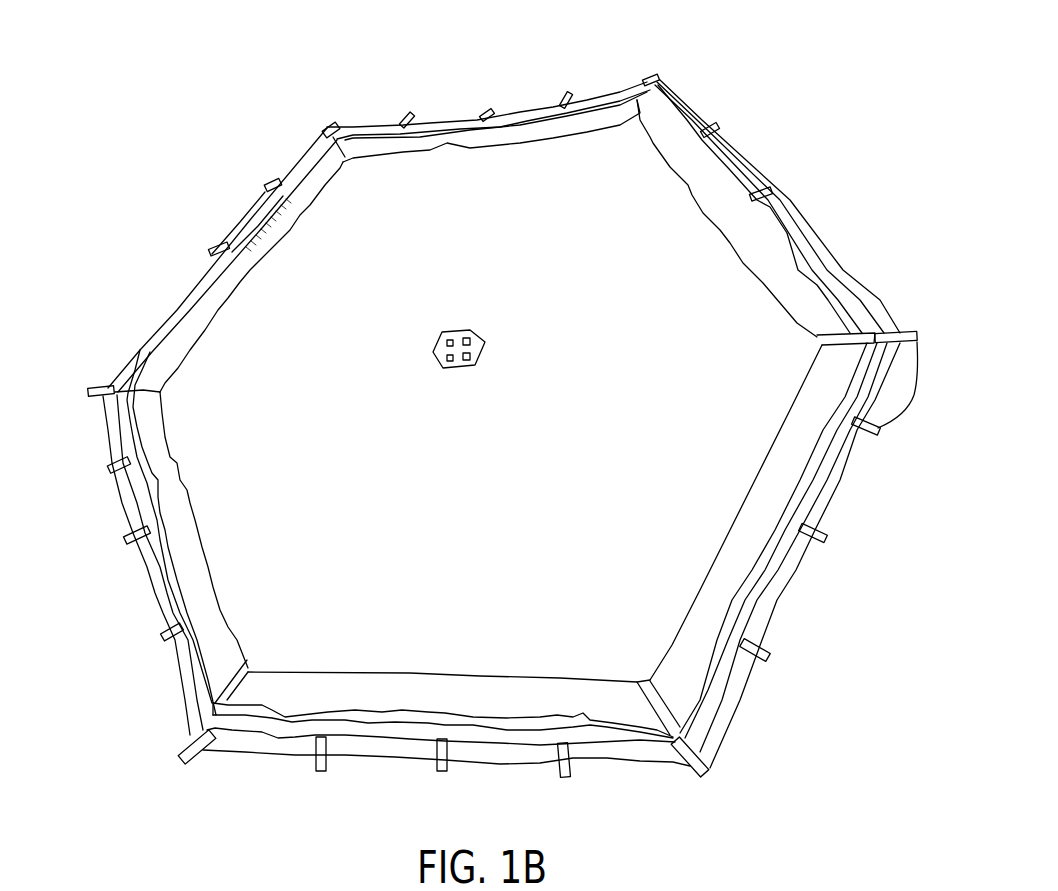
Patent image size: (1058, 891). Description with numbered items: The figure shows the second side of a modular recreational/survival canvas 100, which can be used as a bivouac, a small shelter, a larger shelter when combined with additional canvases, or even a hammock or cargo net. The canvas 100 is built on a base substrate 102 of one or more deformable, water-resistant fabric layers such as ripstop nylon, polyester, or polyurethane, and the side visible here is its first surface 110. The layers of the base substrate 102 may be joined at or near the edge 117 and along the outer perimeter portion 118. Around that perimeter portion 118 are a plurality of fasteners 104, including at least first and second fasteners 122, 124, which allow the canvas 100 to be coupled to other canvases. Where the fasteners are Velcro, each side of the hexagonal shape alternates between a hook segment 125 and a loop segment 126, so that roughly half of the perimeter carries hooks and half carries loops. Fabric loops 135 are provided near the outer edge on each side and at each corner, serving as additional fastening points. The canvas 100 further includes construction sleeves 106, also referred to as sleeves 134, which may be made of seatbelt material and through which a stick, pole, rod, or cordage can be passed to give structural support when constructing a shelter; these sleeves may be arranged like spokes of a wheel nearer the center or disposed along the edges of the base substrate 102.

The modular recreational/survival canvas 100 is at (736, 90).
The base substrate 102 is at (212, 390).
The fasteners 104 is at (597, 100).
The construction sleeves 106 is at (173, 518).
The first surface 110 is at (703, 277).
The edge 117 is at (187, 292).
The outer perimeter portion 118 is at (226, 219).
The first fastener 122 is at (473, 120).
The second fastener 124 is at (803, 178).
The hook segment 125 is at (817, 455).
The loop segment 126 is at (587, 722).
The sleeves 134 is at (174, 533).
The fabric loops 135 is at (928, 398).